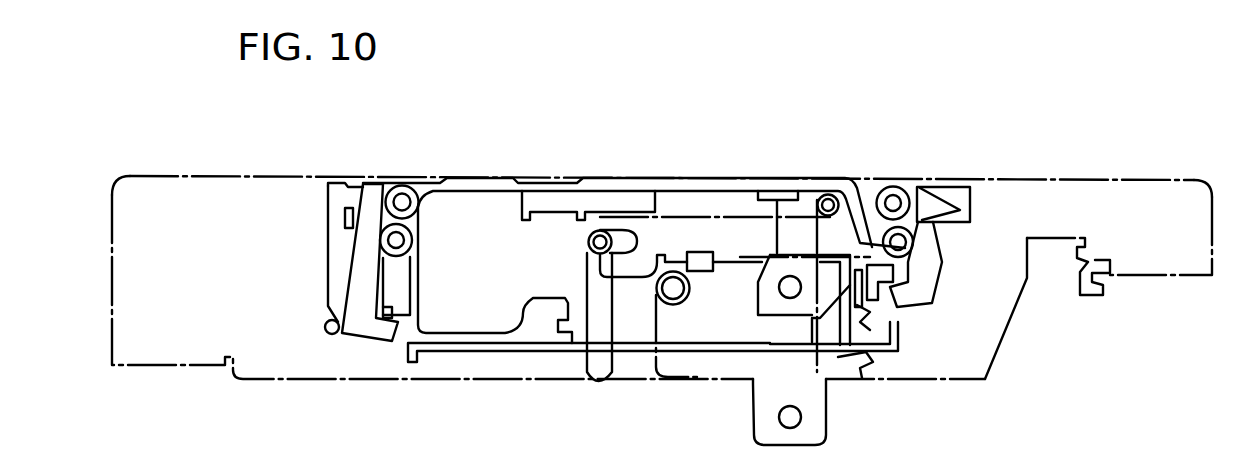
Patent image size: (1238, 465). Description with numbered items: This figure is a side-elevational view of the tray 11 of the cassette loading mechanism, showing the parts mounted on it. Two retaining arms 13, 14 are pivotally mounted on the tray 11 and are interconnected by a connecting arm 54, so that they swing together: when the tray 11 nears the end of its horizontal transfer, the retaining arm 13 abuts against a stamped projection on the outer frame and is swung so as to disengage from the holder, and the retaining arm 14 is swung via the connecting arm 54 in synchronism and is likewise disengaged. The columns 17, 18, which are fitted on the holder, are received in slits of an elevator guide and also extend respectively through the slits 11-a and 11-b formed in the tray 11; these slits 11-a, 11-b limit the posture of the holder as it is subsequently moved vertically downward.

The tray 11 is at (1092, 179).
The slit 11-a is at (586, 378).
The slit 11-b is at (836, 352).
The retaining arm 13 is at (950, 188).
The retaining arm 14 is at (380, 187).
The column 17 is at (590, 234).
The column 18 is at (829, 195).
The connecting arm 54 is at (577, 181).